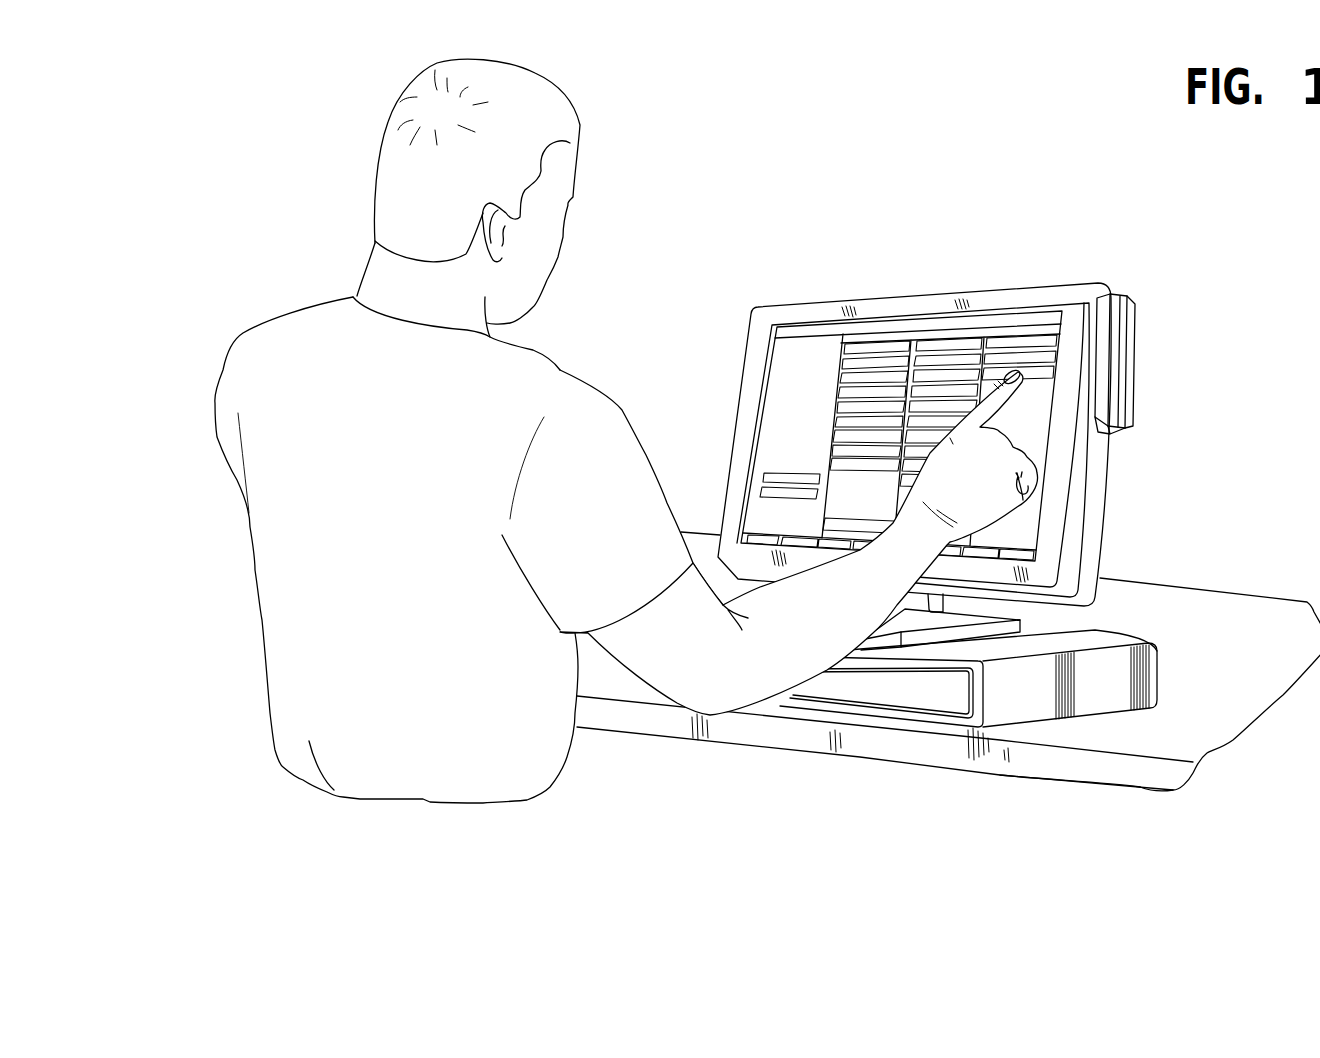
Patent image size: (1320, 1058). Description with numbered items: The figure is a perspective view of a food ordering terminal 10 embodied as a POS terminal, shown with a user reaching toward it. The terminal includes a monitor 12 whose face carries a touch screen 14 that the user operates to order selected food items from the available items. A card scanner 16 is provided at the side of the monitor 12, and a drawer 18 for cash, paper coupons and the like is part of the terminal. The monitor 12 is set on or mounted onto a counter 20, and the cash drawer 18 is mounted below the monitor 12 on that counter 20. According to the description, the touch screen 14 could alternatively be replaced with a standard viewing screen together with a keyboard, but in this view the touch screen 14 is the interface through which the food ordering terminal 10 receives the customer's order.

The food ordering terminal 10 is at (938, 512).
The monitor 12 is at (896, 424).
The touch screen 14 is at (755, 402).
The card scanner 16 is at (1137, 350).
The drawer 18 is at (928, 702).
The counter 20 is at (1165, 582).